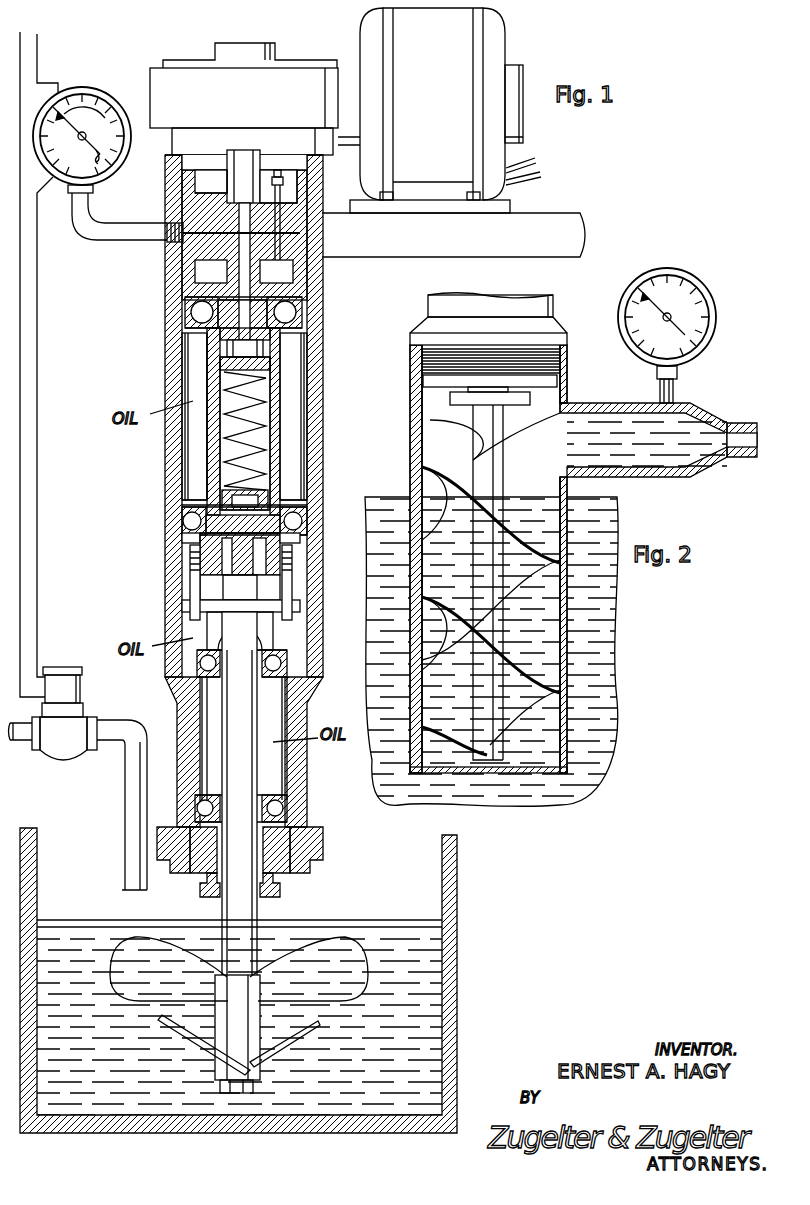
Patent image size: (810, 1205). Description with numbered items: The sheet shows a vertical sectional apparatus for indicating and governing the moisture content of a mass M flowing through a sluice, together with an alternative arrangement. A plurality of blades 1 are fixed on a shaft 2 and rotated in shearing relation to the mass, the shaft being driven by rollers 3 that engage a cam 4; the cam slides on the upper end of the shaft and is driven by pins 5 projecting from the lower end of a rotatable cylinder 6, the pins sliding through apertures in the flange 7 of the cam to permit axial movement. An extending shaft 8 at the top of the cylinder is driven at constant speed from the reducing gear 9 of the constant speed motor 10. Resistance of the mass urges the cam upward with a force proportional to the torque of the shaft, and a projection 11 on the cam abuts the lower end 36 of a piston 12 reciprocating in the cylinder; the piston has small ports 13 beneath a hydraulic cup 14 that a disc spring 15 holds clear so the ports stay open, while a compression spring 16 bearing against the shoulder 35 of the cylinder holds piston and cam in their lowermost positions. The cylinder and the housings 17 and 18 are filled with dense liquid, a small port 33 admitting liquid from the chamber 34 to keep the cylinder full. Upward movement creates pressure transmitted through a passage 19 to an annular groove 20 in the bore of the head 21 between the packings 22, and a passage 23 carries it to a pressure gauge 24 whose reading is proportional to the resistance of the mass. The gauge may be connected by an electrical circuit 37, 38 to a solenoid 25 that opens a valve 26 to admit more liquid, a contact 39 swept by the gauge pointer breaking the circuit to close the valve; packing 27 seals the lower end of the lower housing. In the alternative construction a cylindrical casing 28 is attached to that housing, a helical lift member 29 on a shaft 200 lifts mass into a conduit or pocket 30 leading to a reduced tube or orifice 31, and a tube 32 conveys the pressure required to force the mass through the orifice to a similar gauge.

In FIG. 1, the blades 1 is at (325, 945).
In FIG. 1, the shaft 2 is at (249, 914).
In FIG. 1, the rollers 3 is at (262, 634).
In FIG. 1, the cam 4 is at (210, 628).
In FIG. 1, the pins 5 is at (193, 583).
In FIG. 1, the rotatable cylinder 6 is at (277, 460).
In FIG. 1, the flange 7 is at (298, 604).
In FIG. 1, the extending shaft 8 is at (240, 160).
In FIG. 1, the reducing gear 9 is at (284, 80).
In FIG. 1, the constant speed motor 10 is at (498, 42).
In FIG. 1, the projection 11 is at (228, 594).
In FIG. 1, the piston 12 is at (215, 545).
In FIG. 1, the ports 13 is at (257, 533).
In FIG. 1, the hydraulic cup 14 is at (272, 492).
In FIG. 1, the disc spring 15 is at (216, 513).
In FIG. 1, the compression spring 16 is at (257, 418).
In FIG. 1, the housing 17 is at (313, 372).
In FIG. 1, the housing 18 is at (300, 762).
In FIG. 2, the housing 18 is at (553, 308).
In FIG. 1, the passage 19 is at (312, 334).
In FIG. 1, the annular groove 20 is at (303, 236).
In FIG. 1, the head 21 is at (323, 260).
In FIG. 1, the packings 22 is at (300, 213).
In FIG. 1, the passage 23 is at (178, 216).
In FIG. 1, the pressure gauge 24 is at (72, 87).
In FIG. 2, the pressure gauge 24 is at (700, 283).
In FIG. 1, the solenoid 25 is at (62, 675).
In FIG. 1, the valve 26 is at (75, 726).
In FIG. 1, the packing 27 is at (303, 833).
In FIG. 2, the cylindrical casing 28 is at (412, 426).
In FIG. 2, the helical lift member 29 is at (420, 622).
In FIG. 2, the conduit or pocket 30 is at (627, 478).
In FIG. 2, the tube or orifice 31 is at (738, 430).
In FIG. 2, the tube 32 is at (676, 392).
In FIG. 1, the port 33 is at (208, 484).
In FIG. 1, the chamber 34 is at (224, 440).
In FIG. 1, the shoulder 35 is at (207, 375).
In FIG. 1, the lower end of piston 36 is at (235, 572).
In FIG. 1, the electrical circuit 37 is at (20, 32).
In FIG. 1, the electrical circuit 38 is at (37, 40).
In FIG. 1, the contact 39 is at (102, 108).
In FIG. 2, the shaft 200 is at (567, 406).
In FIG. 1, the mass M is at (405, 920).
In FIG. 2, the mass M is at (607, 618).